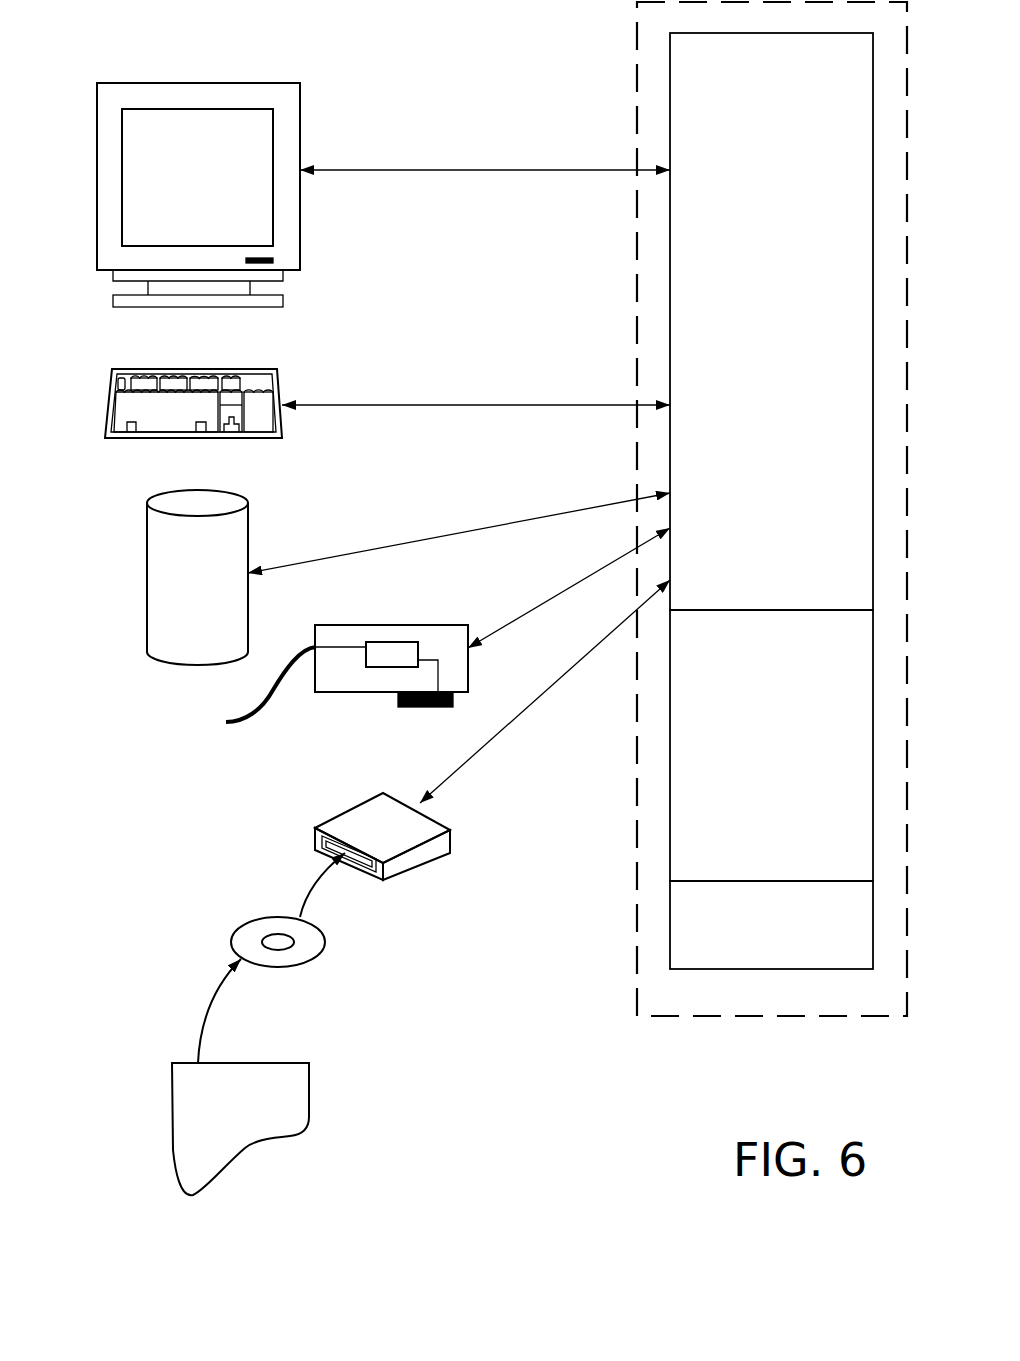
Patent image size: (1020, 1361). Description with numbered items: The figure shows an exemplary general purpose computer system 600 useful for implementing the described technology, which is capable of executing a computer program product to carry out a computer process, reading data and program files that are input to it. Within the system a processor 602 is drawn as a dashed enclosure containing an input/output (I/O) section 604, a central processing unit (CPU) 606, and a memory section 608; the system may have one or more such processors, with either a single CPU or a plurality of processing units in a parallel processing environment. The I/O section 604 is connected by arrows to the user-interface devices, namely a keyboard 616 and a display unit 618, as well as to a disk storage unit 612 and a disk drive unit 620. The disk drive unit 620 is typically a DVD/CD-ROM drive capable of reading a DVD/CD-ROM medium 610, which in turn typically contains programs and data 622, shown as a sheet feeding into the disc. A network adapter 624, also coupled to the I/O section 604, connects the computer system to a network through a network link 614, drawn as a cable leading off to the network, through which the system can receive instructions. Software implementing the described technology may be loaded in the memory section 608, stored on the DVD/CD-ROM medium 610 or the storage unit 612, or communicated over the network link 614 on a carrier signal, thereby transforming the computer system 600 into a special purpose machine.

The general purpose computer system 600 is at (541, 1045).
The processor 602 is at (637, 67).
The input/output (I/O) section 604 is at (771, 321).
The central processing unit (CPU) 606 is at (771, 745).
The memory section 608 is at (771, 925).
The DVD/CD-ROM medium 610 is at (248, 920).
The disk storage unit 612 is at (147, 525).
The network link 614 is at (252, 724).
The keyboard 616 is at (150, 367).
The display unit 618 is at (163, 83).
The disk drive unit 620 is at (367, 828).
The programs and data 622 is at (309, 1085).
The network adapter 624 is at (367, 693).